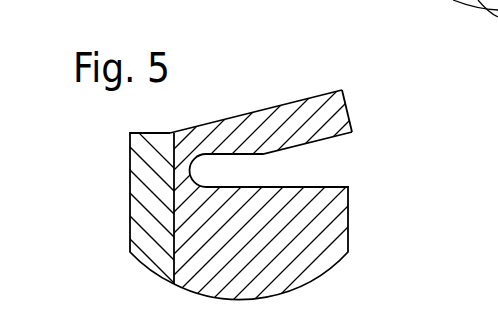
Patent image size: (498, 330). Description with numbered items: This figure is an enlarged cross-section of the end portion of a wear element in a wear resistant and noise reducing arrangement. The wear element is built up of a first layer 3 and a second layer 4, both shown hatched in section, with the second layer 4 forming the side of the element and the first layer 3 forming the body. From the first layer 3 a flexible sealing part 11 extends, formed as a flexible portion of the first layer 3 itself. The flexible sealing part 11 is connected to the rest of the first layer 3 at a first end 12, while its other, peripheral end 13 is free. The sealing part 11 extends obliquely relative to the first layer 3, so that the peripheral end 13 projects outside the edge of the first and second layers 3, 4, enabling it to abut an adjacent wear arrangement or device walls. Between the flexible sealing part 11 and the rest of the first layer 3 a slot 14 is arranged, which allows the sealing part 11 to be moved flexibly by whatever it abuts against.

The first layer 3 is at (267, 267).
The second layer 4 is at (138, 193).
The flexible sealing part 11 is at (290, 118).
The first end 12 is at (192, 137).
The peripheral end 13 is at (340, 115).
The slot 14 is at (287, 168).